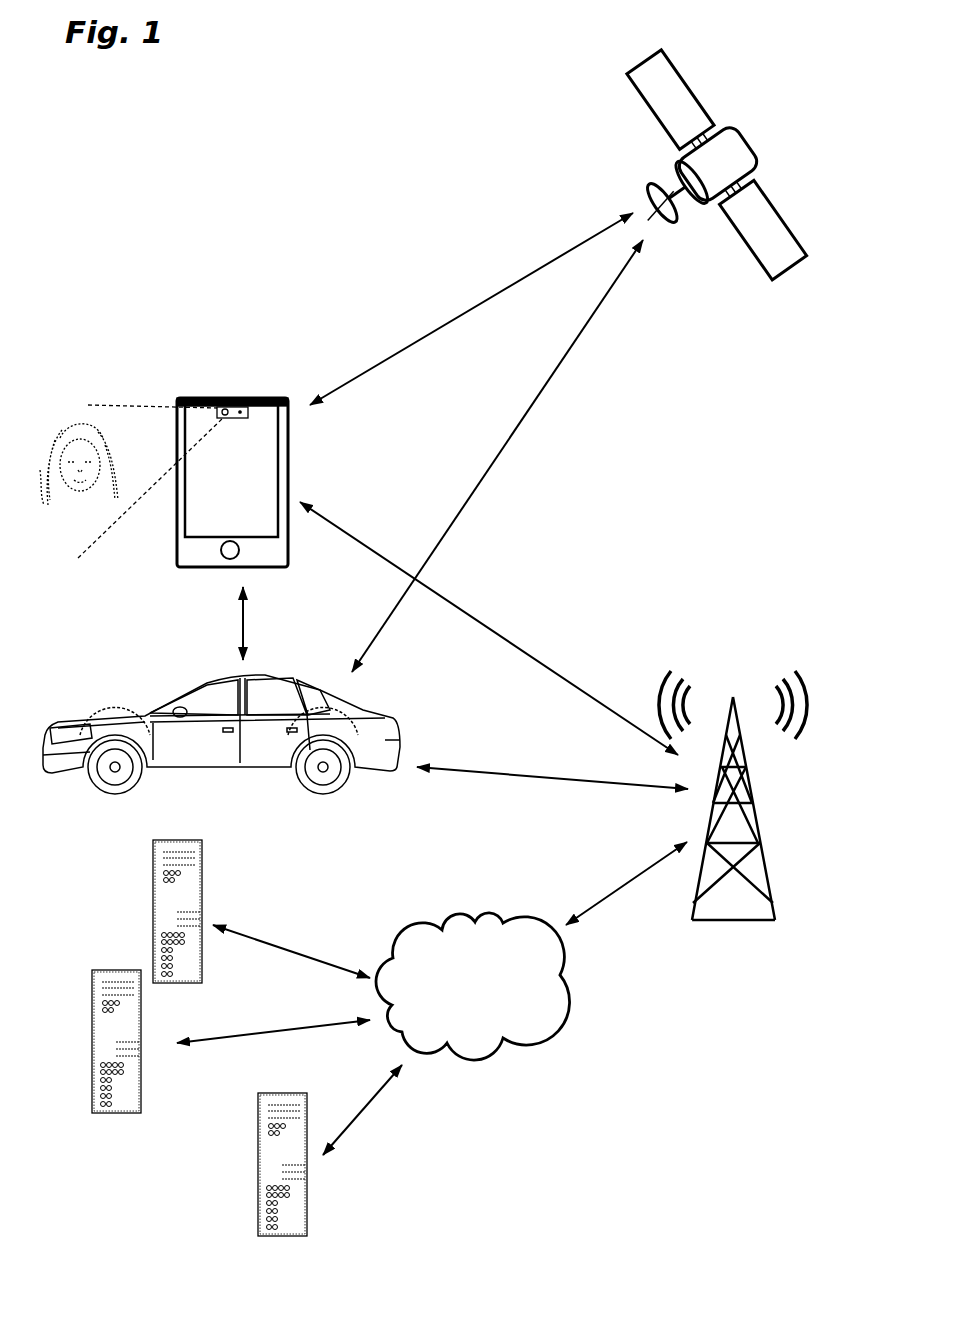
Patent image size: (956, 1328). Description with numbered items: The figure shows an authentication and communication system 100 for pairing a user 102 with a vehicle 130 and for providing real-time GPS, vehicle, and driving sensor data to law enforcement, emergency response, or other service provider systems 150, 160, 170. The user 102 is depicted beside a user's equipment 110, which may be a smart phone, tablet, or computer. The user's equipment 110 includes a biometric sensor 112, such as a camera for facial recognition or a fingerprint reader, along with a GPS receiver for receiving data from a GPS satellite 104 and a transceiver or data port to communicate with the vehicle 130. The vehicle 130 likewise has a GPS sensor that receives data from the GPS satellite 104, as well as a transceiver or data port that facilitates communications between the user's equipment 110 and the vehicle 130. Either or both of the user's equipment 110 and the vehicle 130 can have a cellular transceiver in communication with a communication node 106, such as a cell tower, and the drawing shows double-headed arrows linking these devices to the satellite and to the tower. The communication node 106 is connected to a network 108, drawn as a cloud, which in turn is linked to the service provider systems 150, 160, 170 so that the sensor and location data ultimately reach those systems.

The authentication and communication system 100 is at (321, 150).
The user 102 is at (33, 460).
The GPS satellite 104 is at (790, 210).
The communication node 106 is at (765, 845).
The network 108 is at (473, 986).
The user's equipment 110 is at (183, 459).
The biometric sensor 112 is at (210, 398).
The vehicle 130 is at (167, 695).
The service provider system 150 is at (203, 873).
The service provider system 160 is at (92, 1024).
The service provider system 170 is at (258, 1152).